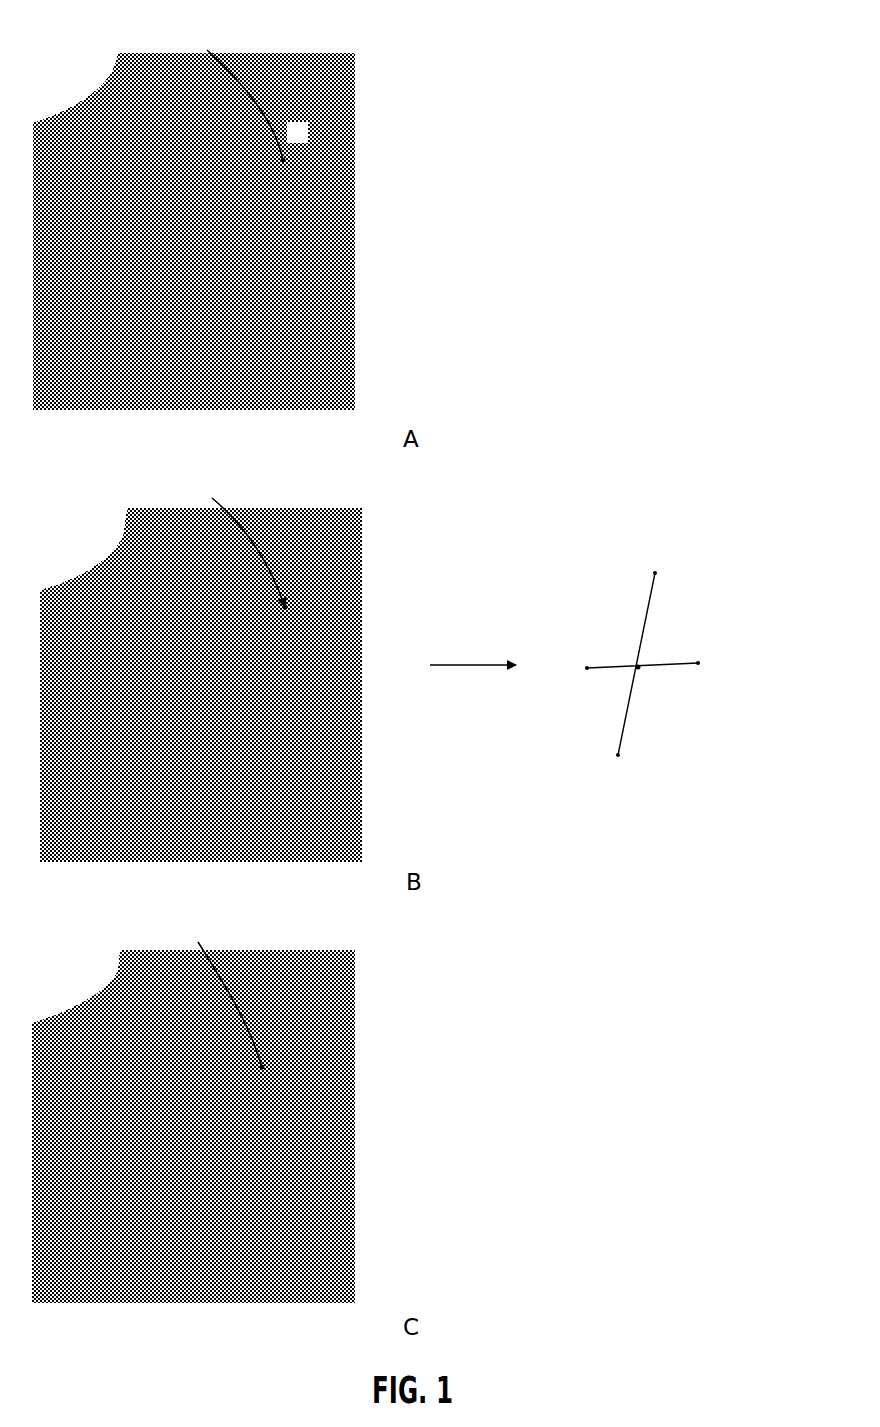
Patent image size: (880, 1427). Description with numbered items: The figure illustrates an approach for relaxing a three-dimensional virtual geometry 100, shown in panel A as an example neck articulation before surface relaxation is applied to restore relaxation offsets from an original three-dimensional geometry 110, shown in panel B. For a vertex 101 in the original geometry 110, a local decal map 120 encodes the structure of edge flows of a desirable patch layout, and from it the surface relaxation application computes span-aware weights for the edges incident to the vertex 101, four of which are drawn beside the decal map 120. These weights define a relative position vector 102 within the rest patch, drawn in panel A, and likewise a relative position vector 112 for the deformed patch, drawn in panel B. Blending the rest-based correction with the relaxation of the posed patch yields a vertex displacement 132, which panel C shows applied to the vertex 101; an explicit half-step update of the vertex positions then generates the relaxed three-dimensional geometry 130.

The 3D virtual geometry 100 is at (358, 80).
The vertex 101 is at (283, 160).
The relative position vector 102 is at (229, 95).
The original 3D geometry 110 is at (368, 533).
The relative position vector 112 is at (228, 545).
The local decal map 120 is at (687, 603).
The 3D geometry 130 is at (360, 990).
The vertex displacement 132 is at (210, 995).